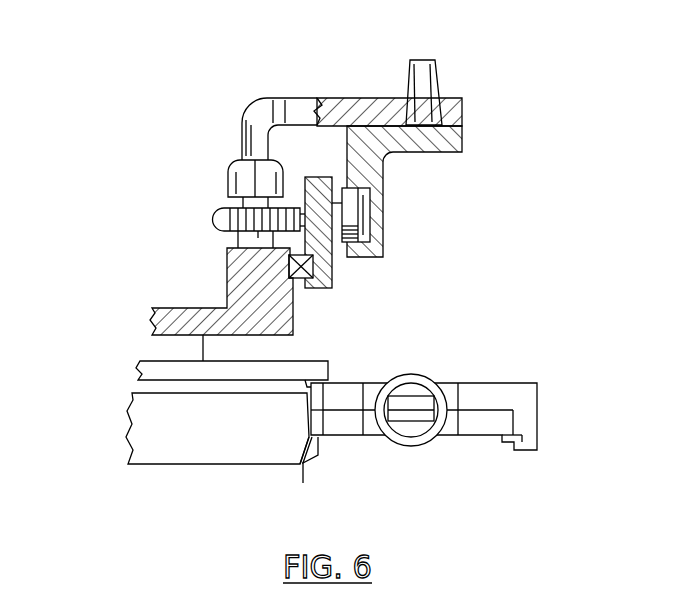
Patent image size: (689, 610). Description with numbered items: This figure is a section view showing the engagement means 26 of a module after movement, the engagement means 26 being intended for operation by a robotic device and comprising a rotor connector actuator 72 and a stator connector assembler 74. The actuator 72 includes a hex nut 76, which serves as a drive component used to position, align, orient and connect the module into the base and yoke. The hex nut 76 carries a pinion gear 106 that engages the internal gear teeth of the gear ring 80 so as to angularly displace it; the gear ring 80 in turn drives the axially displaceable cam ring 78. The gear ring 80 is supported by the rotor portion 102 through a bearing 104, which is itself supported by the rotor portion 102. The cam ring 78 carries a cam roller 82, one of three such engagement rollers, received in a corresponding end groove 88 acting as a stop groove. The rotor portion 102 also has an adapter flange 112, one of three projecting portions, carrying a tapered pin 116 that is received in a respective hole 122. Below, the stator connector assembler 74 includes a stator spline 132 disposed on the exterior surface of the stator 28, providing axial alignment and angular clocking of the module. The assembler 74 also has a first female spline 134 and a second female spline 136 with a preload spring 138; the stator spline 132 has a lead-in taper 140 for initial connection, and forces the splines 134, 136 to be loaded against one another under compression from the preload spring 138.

The engagement means 26 is at (202, 121).
The stator 28 is at (138, 360).
The rotor connector actuator 72 is at (495, 218).
The stator connector assembler 74 is at (552, 388).
The hex nut 76 is at (228, 173).
The cam ring 78 is at (462, 135).
The gear ring 80 is at (332, 288).
The cam roller 82 is at (370, 232).
The end groove 88 is at (373, 197).
The rotor portion 102 is at (208, 307).
The bearing 104 is at (303, 280).
The pinion gear 106 is at (212, 220).
The adapter flange 112 is at (462, 105).
The tapered pin 116 is at (418, 73).
The hole 122 is at (403, 112).
The stator spline 132 is at (318, 447).
The first female spline 134 is at (310, 400).
The second female spline 136 is at (300, 463).
The preload spring 138 is at (422, 375).
The lead-in taper 140 is at (320, 452).